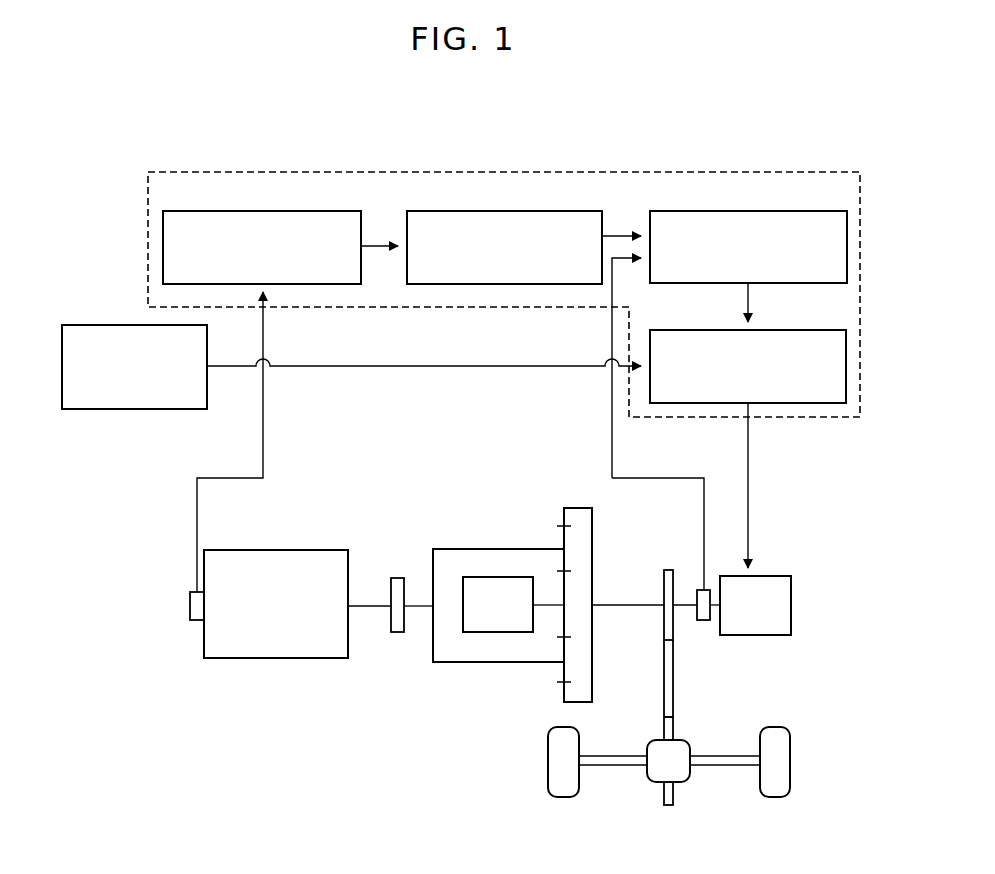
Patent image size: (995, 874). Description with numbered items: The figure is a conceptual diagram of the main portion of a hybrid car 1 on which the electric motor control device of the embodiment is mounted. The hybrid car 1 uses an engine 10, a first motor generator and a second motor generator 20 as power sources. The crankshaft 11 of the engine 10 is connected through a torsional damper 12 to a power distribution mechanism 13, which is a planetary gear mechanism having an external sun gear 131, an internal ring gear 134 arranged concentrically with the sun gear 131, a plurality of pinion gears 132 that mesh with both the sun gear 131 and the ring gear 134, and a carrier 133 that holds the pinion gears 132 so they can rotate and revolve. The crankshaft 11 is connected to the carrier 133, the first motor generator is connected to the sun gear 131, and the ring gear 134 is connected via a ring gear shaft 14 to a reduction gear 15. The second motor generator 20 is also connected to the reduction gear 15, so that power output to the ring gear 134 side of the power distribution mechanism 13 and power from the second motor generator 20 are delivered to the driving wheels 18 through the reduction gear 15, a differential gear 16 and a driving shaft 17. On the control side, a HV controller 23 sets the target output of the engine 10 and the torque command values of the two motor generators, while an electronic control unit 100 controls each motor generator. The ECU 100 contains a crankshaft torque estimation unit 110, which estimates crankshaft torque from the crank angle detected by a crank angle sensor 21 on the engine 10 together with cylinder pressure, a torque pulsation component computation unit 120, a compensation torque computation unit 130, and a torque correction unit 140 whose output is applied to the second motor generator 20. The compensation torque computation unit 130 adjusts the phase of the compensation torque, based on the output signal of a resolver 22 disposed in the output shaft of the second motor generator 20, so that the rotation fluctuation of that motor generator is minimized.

The hybrid car 1 is at (108, 160).
The electronic control unit (ECU) 100 is at (240, 171).
The crankshaft torque estimation unit 110 is at (361, 220).
The torque pulsation component computation unit 120 is at (407, 276).
The compensation torque computation unit 130 is at (800, 212).
The torque correction unit 140 is at (802, 330).
The HV controller 23 is at (115, 410).
The engine 10 is at (278, 659).
The crank angle sensor 21 is at (190, 606).
The crankshaft 11 is at (370, 608).
The torsional damper 12 is at (398, 578).
The power distribution mechanism 13 is at (478, 494).
The carrier 133 is at (460, 549).
The sun gear 131 is at (564, 622).
The pinion gears 132 is at (562, 537).
The ring gear 134 is at (576, 508).
The ring gear shaft 14 is at (630, 605).
The reduction gear 15 is at (664, 632).
The resolver 22 is at (704, 620).
The second motor generator MG2 20 is at (755, 605).
The differential gear 16 is at (682, 782).
The driving shaft 17 is at (730, 756).
The driving wheels 18 is at (564, 798).